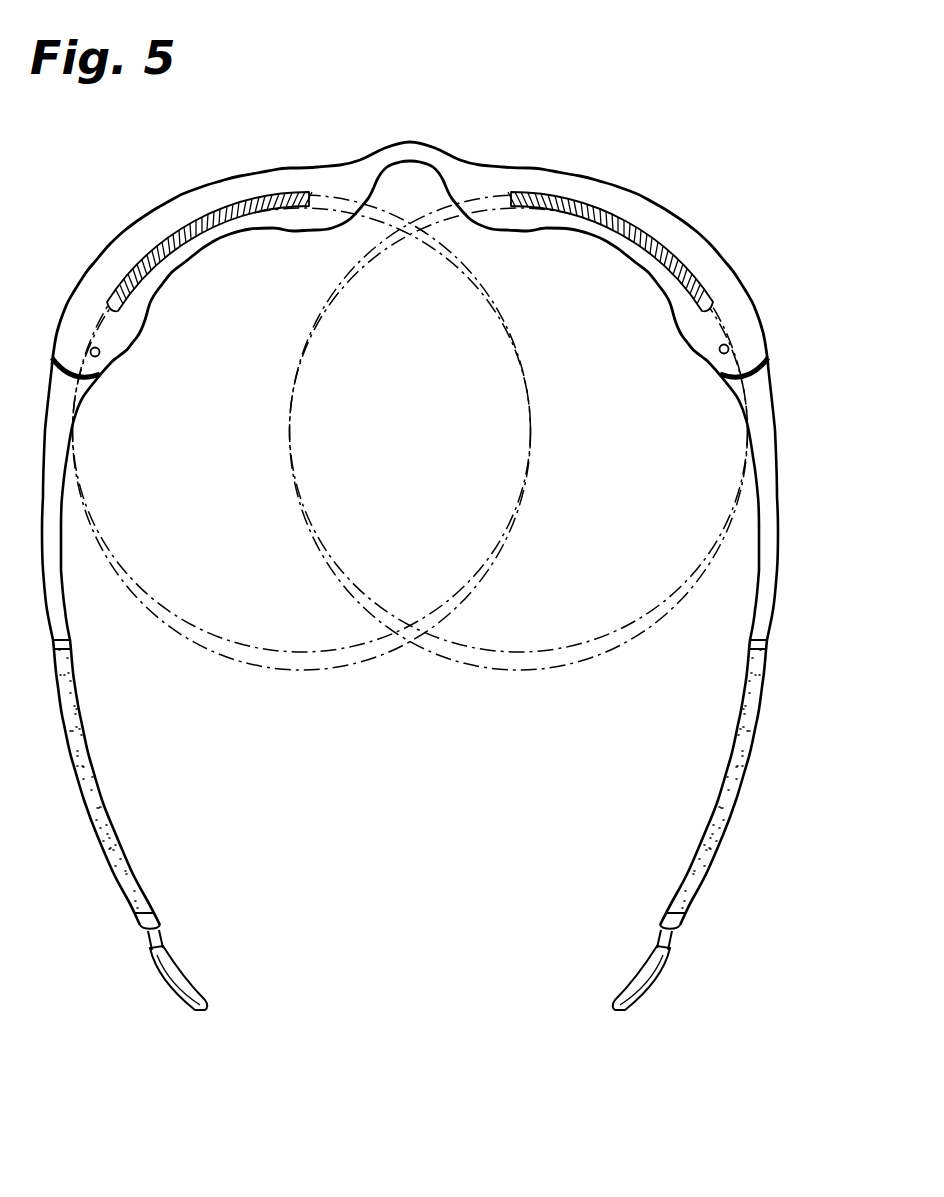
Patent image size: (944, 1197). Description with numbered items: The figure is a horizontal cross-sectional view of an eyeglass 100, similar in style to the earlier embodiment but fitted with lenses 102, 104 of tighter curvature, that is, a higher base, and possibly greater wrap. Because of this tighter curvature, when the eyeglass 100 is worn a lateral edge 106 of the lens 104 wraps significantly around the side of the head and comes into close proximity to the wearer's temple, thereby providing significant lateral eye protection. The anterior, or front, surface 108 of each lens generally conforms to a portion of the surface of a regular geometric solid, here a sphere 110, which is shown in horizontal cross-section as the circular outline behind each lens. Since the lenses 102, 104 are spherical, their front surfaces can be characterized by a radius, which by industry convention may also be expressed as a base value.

The eyeglass 100 is at (450, 78).
The lens 102 is at (178, 233).
The lens 104 is at (604, 213).
The lateral edge 106 is at (700, 288).
The anterior surface 108 is at (628, 223).
The sphere 110 is at (733, 343).